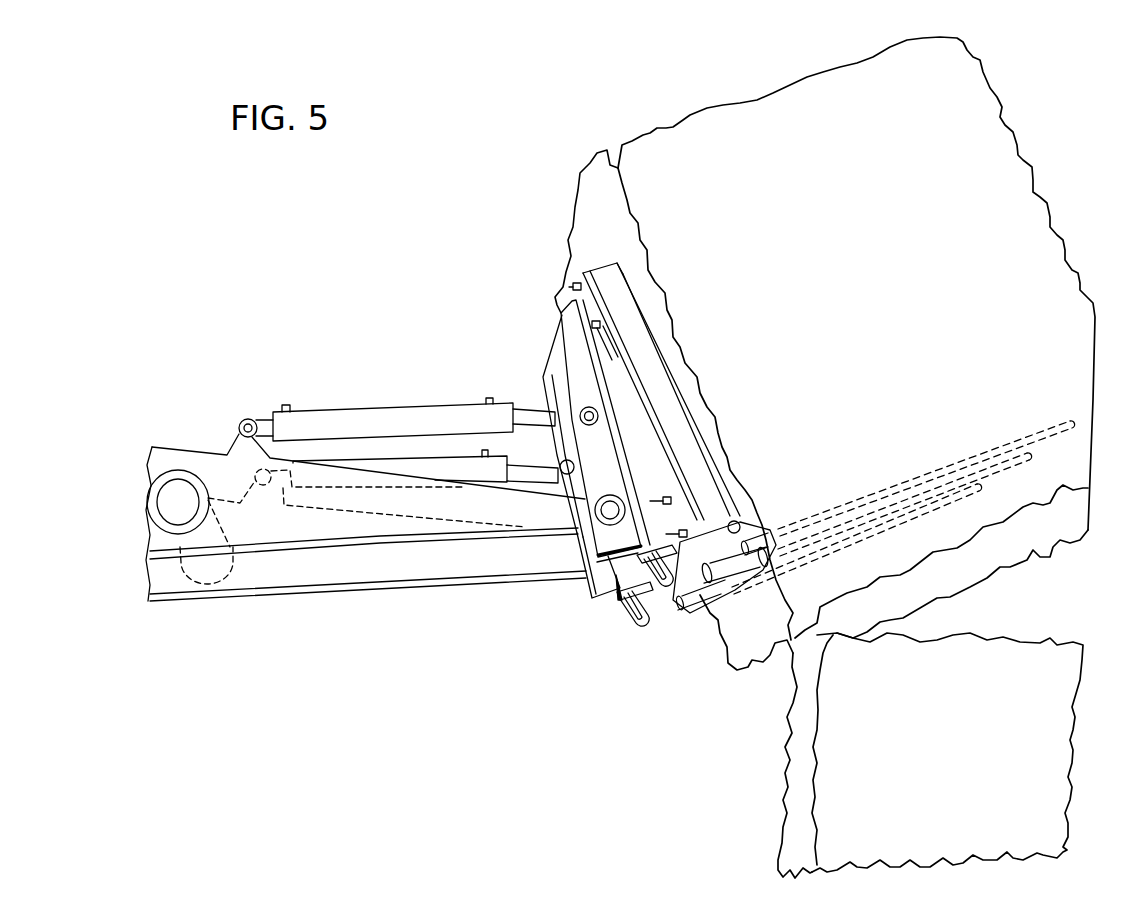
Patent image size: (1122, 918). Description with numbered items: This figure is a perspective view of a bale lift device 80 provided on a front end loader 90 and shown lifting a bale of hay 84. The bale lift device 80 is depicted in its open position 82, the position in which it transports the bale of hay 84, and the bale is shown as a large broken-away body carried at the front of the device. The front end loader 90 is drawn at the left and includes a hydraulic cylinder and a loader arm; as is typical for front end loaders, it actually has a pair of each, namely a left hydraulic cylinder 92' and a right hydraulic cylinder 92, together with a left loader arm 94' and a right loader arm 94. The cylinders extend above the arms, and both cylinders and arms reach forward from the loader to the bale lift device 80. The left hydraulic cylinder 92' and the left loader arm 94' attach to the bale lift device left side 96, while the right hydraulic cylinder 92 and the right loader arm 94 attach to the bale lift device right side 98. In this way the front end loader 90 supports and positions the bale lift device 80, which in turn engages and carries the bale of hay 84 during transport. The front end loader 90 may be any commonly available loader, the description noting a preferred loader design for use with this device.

The bale lift device 80 is at (533, 319).
The open position 82 is at (550, 201).
The bale of hay 84 is at (988, 112).
The front end loader 90 is at (190, 430).
The right hydraulic cylinder 92 is at (414, 397).
The left hydraulic cylinder 92' is at (425, 415).
The right loader arm 94 is at (364, 585).
The left loader arm 94' is at (368, 602).
The bale lift device left side 96 is at (593, 615).
The bale lift device right side 98 is at (620, 600).